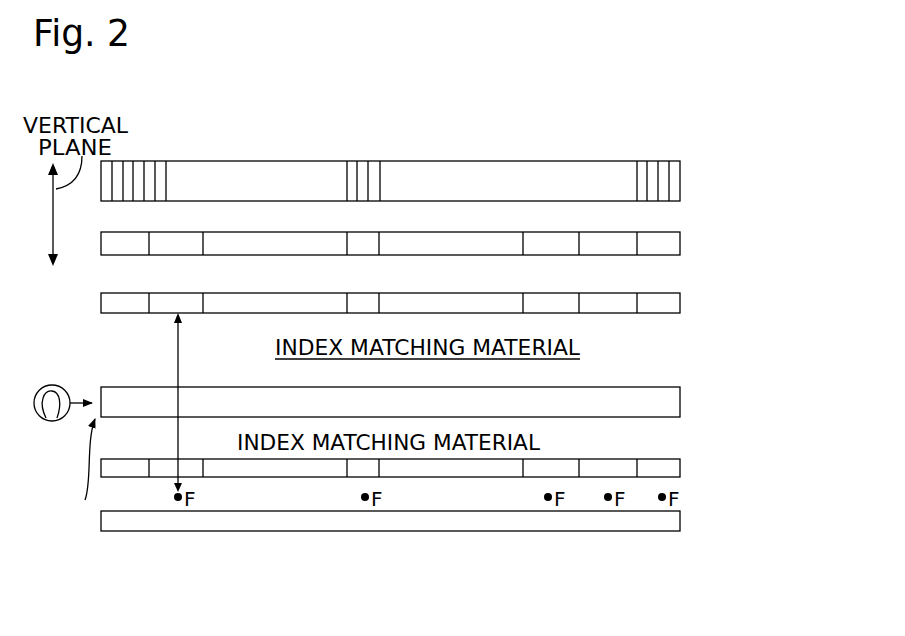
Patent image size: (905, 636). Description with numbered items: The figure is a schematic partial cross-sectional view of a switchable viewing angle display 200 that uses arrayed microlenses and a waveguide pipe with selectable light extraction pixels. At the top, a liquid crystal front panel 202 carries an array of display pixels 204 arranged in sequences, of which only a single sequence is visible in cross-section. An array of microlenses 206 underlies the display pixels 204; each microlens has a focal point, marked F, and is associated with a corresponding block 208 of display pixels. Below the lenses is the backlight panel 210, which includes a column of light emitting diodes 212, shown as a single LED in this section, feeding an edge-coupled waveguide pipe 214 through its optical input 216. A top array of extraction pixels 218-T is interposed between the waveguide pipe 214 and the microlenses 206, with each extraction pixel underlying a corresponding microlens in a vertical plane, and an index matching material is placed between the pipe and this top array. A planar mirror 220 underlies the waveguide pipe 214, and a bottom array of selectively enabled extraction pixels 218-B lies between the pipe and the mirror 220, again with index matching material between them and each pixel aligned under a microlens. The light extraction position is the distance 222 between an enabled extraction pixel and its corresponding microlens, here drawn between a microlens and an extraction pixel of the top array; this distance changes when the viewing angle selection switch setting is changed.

The display 200 is at (153, 111).
The front panel 202 is at (682, 180).
The display pixels 204 is at (656, 160).
The microlenses 206 is at (190, 240).
The block of display pixels 208 is at (380, 160).
The backlight panel 210 is at (675, 532).
The light emitting diodes 212 is at (50, 421).
The waveguide pipe 214 is at (505, 412).
The optical input 216 is at (69, 466).
The top array of extraction pixels 218-T is at (352, 330).
The bottom array of extraction pixels 218-B is at (436, 540).
The planar mirror 220 is at (355, 531).
The distance 222 is at (181, 369).